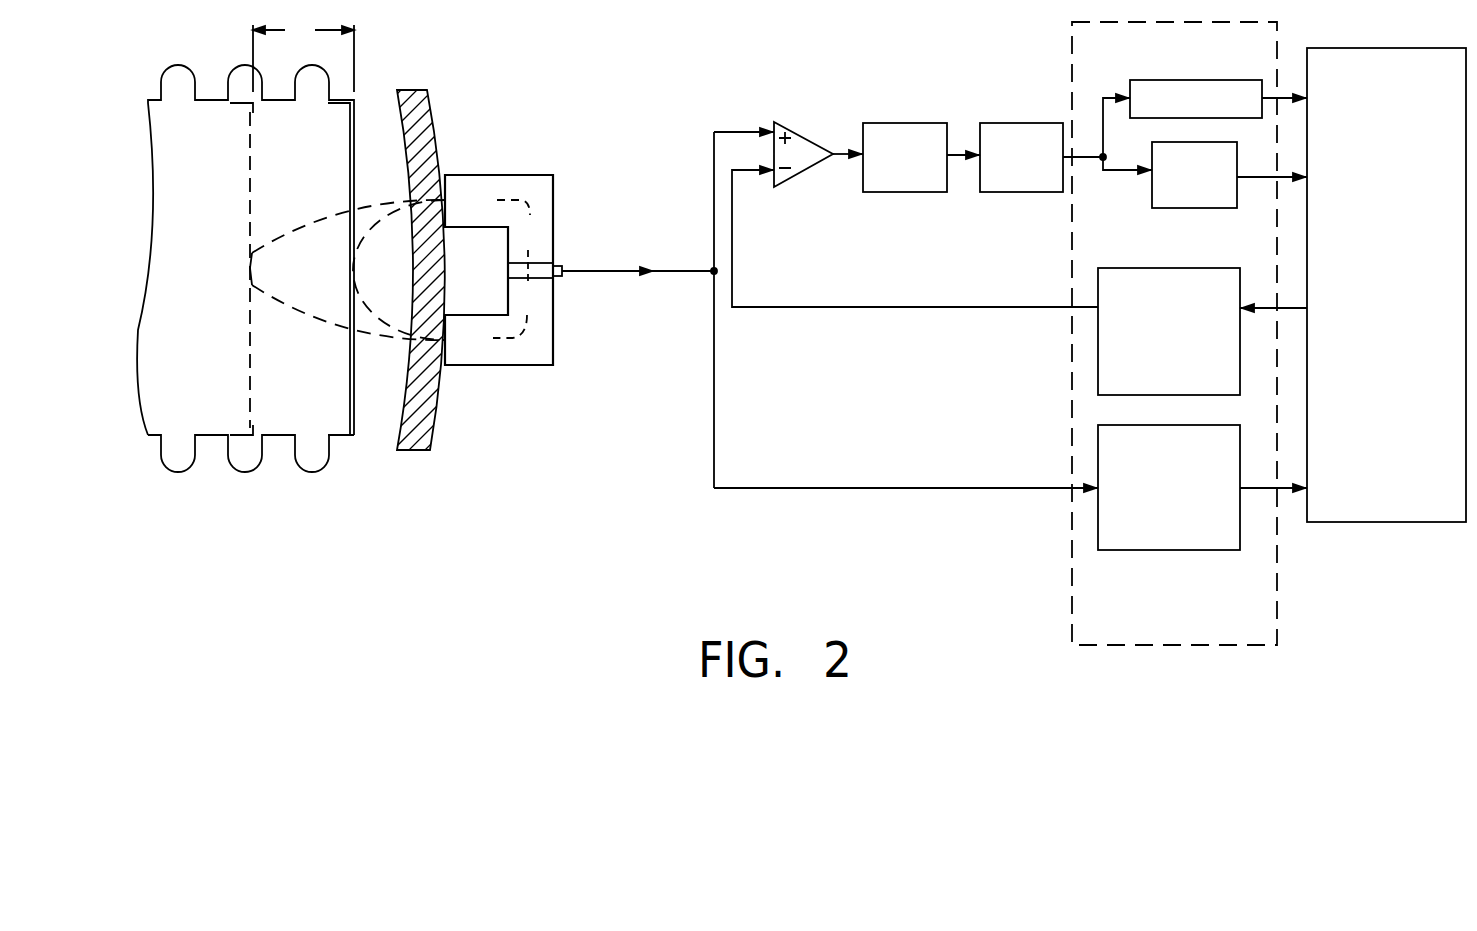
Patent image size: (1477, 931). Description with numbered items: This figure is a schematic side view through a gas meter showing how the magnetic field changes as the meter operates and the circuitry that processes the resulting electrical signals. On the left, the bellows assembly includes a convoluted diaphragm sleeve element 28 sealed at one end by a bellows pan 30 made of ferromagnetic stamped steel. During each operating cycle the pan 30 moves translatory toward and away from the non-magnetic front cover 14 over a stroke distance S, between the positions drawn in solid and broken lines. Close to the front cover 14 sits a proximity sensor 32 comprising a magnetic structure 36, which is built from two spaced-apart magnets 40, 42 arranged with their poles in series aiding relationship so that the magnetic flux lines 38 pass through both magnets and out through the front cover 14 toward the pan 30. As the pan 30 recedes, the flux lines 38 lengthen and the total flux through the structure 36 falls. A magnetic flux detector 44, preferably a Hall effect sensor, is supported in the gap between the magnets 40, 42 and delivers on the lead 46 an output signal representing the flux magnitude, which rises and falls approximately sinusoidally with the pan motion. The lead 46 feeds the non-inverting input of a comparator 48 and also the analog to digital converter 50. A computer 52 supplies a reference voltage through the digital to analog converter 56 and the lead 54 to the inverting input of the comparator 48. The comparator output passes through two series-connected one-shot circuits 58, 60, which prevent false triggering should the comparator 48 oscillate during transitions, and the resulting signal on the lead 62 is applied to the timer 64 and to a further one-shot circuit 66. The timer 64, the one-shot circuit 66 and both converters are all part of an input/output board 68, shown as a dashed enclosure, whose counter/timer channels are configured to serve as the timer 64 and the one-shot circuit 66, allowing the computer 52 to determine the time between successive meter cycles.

The front cover 14 is at (433, 430).
The convoluted diaphragm sleeve element 28 is at (239, 473).
The bellows pan 30 is at (348, 376).
The proximity sensor 32 is at (540, 268).
The magnetic structure 36 is at (498, 366).
The magnetic flux lines 38 is at (518, 198).
The magnet 40 is at (555, 188).
The magnet 42 is at (555, 310).
The magnetic flux detector 44 is at (560, 265).
The lead 46 is at (632, 271).
The comparator 48 is at (808, 137).
The analog to digital converter 50 is at (1145, 550).
The computer 52 is at (1422, 527).
The lead 54 is at (732, 242).
The digital to analog converter 56 is at (1160, 268).
The one-shot circuit 58 is at (868, 123).
The one-shot circuit 60 is at (987, 123).
The lead 62 is at (1082, 157).
The timer 64 is at (1150, 80).
The one-shot circuit 66 is at (1167, 208).
The input/output board 68 is at (1208, 647).